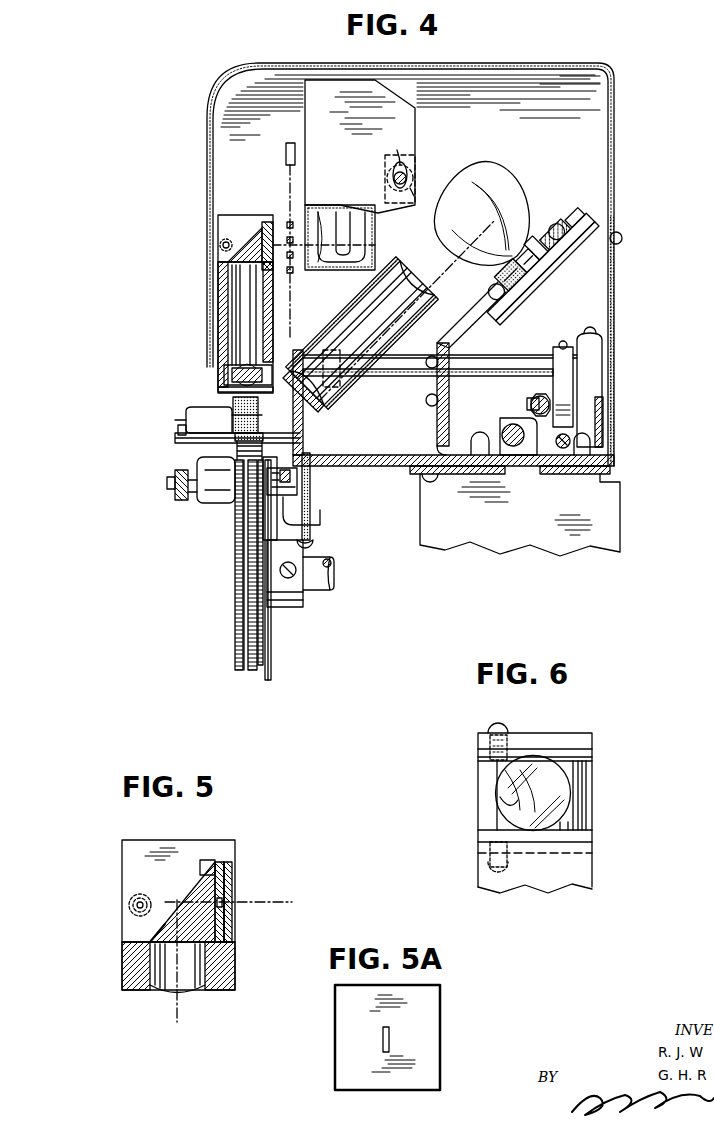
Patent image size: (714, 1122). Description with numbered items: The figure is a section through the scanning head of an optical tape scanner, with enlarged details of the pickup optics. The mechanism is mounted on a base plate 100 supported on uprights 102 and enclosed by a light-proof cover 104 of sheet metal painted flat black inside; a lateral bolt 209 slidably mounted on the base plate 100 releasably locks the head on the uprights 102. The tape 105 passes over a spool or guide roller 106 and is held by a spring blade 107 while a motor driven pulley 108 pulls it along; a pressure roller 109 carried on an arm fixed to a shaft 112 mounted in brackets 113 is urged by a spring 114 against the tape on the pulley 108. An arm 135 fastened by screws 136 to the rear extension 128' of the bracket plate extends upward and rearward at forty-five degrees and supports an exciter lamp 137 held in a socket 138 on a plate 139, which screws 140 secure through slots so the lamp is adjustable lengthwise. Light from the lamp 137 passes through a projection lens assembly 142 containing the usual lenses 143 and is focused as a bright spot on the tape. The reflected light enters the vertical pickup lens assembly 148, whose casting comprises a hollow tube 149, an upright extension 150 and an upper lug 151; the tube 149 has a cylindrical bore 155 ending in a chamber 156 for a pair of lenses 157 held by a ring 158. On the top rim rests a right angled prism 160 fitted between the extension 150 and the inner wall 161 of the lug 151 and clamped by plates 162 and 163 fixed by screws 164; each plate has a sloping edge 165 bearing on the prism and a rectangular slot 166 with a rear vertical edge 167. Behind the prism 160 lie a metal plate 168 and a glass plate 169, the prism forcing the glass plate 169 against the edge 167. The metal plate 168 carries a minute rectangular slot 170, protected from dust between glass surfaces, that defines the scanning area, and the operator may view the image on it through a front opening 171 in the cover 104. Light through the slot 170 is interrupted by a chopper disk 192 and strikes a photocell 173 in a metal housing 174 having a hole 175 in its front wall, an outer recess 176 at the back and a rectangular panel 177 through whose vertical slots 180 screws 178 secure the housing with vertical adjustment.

In FIG. 4, the base plate 100 is at (385, 462).
In FIG. 4, the uprights 102 is at (615, 524).
In FIG. 4, the light-proof cover 104 is at (514, 63).
In FIG. 4, the tape 105 is at (243, 468).
In FIG. 4, the spool or guide roller 106 is at (205, 506).
In FIG. 4, the spring blade 107 is at (234, 455).
In FIG. 4, the motor driven pulley 108 is at (240, 635).
In FIG. 4, the pressure roller 109 is at (248, 428).
In FIG. 4, the shaft 112 is at (531, 356).
In FIG. 4, the brackets 113 is at (592, 352).
In FIG. 4, the spring 114 is at (538, 398).
In FIG. 4, the rear extension 128' is at (420, 399).
In FIG. 4, the arm 135 is at (462, 327).
In FIG. 4, the screws 136 is at (426, 400).
In FIG. 4, the exciter lamp 137 is at (505, 170).
In FIG. 4, the socket 138 is at (545, 270).
In FIG. 4, the plate 139 is at (583, 228).
In FIG. 4, the screws 140 is at (553, 227).
In FIG. 4, the projection lens assembly 142 is at (357, 302).
In FIG. 4, the lenses 143 is at (410, 280).
In FIG. 4, the pickup lens assembly 148 is at (227, 201).
In FIG. 4, the hollow column or tube 149 is at (227, 293).
In FIG. 6, the hollow column or tube 149 is at (480, 795).
In FIG. 5, the hollow column or tube 149 is at (128, 976).
In FIG. 6, the upright extension 150 is at (585, 744).
In FIG. 6, the upper lug 151 is at (585, 876).
In FIG. 4, the cylindrical bore 155 is at (233, 320).
In FIG. 6, the cylindrical bore 155 is at (503, 805).
In FIG. 5, the cylindrical bore 155 is at (205, 984).
In FIG. 4, the chamber 156 is at (232, 375).
In FIG. 4, the lenses 157 is at (230, 362).
In FIG. 4, the ring 158 is at (240, 392).
In FIG. 4, the right angled prism 160 is at (258, 240).
In FIG. 6, the right angled prism 160 is at (497, 768).
In FIG. 5, the right angled prism 160 is at (192, 895).
In FIG. 6, the inner wall 161 is at (562, 833).
In FIG. 4, the plate 162 is at (226, 223).
In FIG. 6, the plate 162 is at (481, 753).
In FIG. 5, the plate 162 is at (130, 869).
In FIG. 6, the plate 163 is at (481, 834).
In FIG. 6, the screws 164 is at (488, 727).
In FIG. 5, the screws 164 is at (128, 905).
In FIG. 5, the sloping edge 165 is at (150, 928).
In FIG. 5, the rectangular slot 166 is at (208, 860).
In FIG. 5, the rear vertical edge 167 is at (225, 888).
In FIG. 6, the metal plate 168 is at (575, 775).
In FIG. 5, the metal plate 168 is at (223, 868).
In FIG. 5A, the metal plate 168 is at (430, 1006).
In FIG. 6, the glass plate 169 is at (587, 790).
In FIG. 5, the glass plate 169 is at (233, 927).
In FIG. 5, the rectangular slot 170 is at (224, 900).
In FIG. 5A, the rectangular slot 170 is at (389, 1040).
In FIG. 4, the front opening 171 is at (211, 246).
In FIG. 4, the photocell 173 is at (340, 222).
In FIG. 4, the metal housing 174 is at (405, 125).
In FIG. 4, the hole 175 is at (308, 242).
In FIG. 4, the outer recess 176 is at (374, 232).
In FIG. 4, the rectangular panel 177 is at (412, 196).
In FIG. 4, the screws 178 is at (398, 166).
In FIG. 4, the vertical slots 180 is at (406, 172).
In FIG. 4, the chopper disk 192 is at (286, 154).
In FIG. 4, the lateral bolt 209 is at (506, 425).